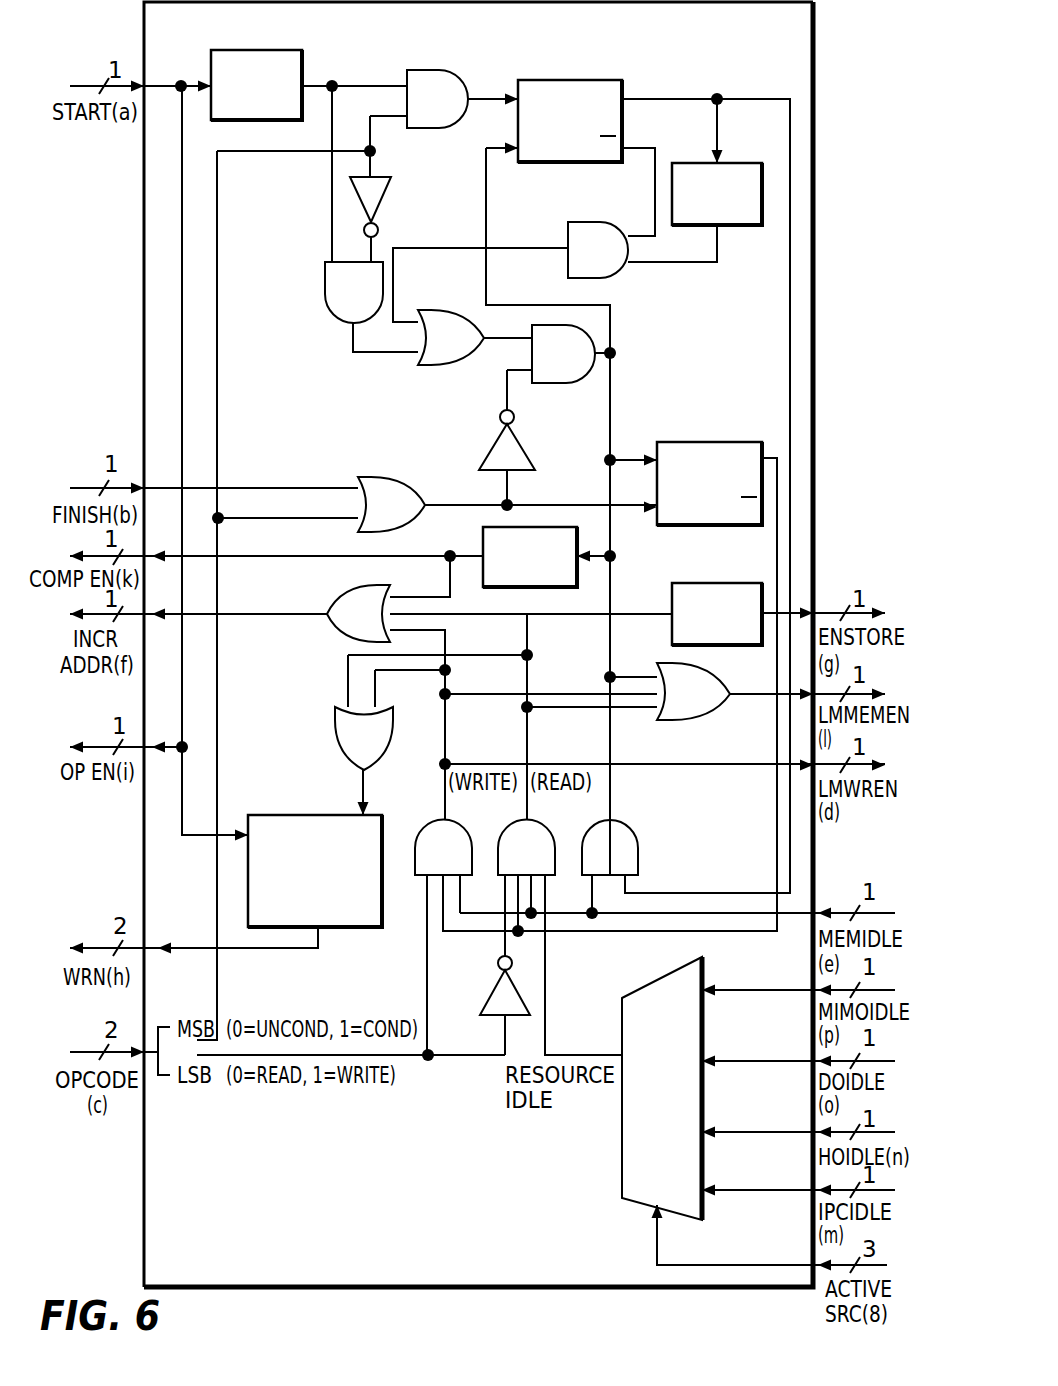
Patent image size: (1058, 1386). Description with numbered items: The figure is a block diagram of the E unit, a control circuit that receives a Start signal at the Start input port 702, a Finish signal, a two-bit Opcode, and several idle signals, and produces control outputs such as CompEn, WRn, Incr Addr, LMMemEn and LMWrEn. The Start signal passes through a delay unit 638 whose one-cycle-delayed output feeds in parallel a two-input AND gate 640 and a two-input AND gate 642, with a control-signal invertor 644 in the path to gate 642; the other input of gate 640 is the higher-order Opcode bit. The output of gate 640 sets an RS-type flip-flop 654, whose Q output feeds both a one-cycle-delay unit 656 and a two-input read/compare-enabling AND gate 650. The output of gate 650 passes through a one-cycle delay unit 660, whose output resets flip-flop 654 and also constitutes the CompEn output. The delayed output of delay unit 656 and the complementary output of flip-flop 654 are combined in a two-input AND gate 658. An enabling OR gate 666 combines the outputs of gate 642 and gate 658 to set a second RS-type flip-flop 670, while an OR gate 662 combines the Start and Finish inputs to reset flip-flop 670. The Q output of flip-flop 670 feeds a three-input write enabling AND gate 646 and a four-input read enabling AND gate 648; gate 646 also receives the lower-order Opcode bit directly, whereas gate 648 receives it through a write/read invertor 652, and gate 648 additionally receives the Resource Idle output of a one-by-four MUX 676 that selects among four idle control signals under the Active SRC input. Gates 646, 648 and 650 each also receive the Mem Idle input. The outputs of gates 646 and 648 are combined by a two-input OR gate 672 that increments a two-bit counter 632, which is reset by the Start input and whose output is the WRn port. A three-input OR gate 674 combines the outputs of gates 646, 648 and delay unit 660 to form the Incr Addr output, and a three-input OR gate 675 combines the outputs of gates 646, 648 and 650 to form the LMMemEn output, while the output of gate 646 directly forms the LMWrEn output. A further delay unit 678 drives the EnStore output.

The Start input port 702 is at (80, 86).
The delay unit 638 is at (268, 52).
The two-input AND gate 640 is at (415, 70).
The two-input AND gate 642 is at (326, 278).
The control-signal invertor 644 is at (388, 200).
The three-input write enabling AND gate 646 is at (453, 830).
The four-input read enabling AND gate 648 is at (533, 830).
The two-input read/compare-enabling AND gate 650 is at (626, 832).
The write/read invertor 652 is at (484, 1008).
The flip-flop 654 is at (563, 82).
The one-cycle-delay unit 656 is at (766, 168).
The two-input AND gate 658 is at (612, 224).
The one-cycle delay unit 660 is at (485, 545).
The OR gate 662 is at (395, 478).
The enabling OR gate 666 is at (452, 310).
The flip-flop 670 is at (712, 450).
The two-input OR gate 672 is at (345, 745).
The three-input OR gate 674 is at (332, 592).
The three-input OR gate 675 is at (690, 720).
The MUX 676 is at (628, 1015).
The delay unit 678 is at (727, 583).
The 2-bit counter 632 is at (360, 920).